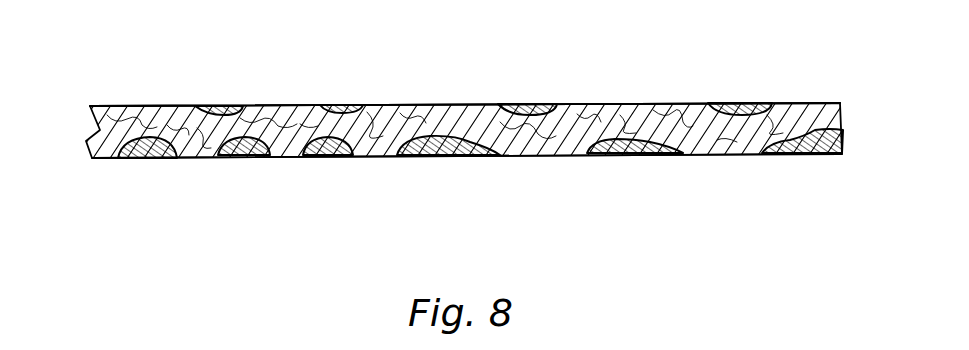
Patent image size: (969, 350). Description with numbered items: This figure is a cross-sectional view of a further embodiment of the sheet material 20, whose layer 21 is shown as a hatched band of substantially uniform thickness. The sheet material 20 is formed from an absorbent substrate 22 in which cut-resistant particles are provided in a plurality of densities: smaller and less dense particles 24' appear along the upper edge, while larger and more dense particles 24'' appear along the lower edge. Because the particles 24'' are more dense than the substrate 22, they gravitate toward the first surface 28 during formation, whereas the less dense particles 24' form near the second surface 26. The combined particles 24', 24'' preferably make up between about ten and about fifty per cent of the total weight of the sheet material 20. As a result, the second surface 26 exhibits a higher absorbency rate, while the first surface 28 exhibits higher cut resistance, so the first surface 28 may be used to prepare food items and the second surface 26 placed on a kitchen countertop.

The sheet material 20 is at (70, 140).
The web layer 21 is at (596, 70).
The absorbent substrate 22 is at (278, 115).
The smaller and less dense particles 24' is at (489, 70).
The larger and more dense particles 24'' is at (480, 206).
The second surface 26 is at (141, 106).
The first surface 28 is at (467, 194).